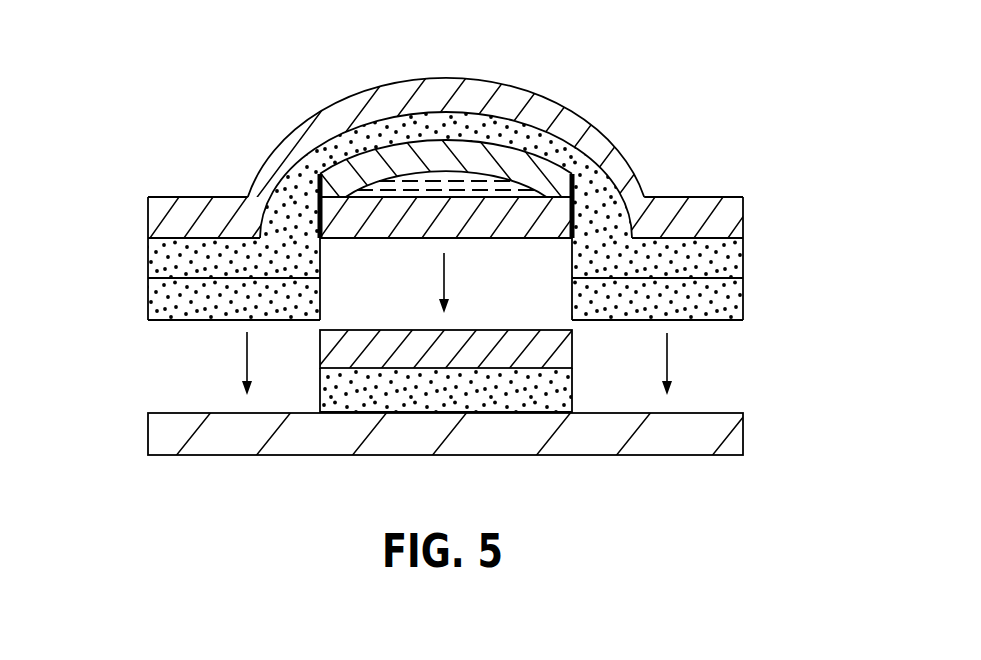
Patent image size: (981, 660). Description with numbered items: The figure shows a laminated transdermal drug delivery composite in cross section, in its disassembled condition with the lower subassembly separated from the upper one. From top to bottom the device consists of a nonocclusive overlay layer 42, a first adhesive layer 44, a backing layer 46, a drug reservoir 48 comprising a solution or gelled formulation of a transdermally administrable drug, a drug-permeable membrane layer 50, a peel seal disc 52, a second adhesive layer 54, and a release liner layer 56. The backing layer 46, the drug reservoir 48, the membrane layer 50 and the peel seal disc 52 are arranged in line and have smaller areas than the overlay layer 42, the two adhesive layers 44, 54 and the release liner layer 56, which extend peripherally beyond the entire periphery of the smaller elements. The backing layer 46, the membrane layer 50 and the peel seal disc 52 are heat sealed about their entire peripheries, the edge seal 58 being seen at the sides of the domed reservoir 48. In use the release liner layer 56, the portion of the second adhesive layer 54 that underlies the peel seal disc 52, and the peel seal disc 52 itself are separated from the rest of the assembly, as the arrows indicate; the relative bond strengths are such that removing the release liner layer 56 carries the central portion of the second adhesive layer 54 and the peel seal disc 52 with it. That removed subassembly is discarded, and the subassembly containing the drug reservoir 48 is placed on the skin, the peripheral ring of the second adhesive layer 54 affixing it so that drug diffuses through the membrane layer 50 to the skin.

The nonocclusive overlay layer 42 is at (718, 213).
The first adhesive layer 44 is at (718, 255).
The backing layer 46 is at (540, 190).
The drug reservoir 48 is at (437, 175).
The drug-permeable membrane layer 50 is at (537, 225).
The peel seal disc 52 is at (547, 355).
The second adhesive layer 54 is at (727, 302).
The release liner layer 56 is at (725, 429).
The side wall barrier 58 is at (315, 192).